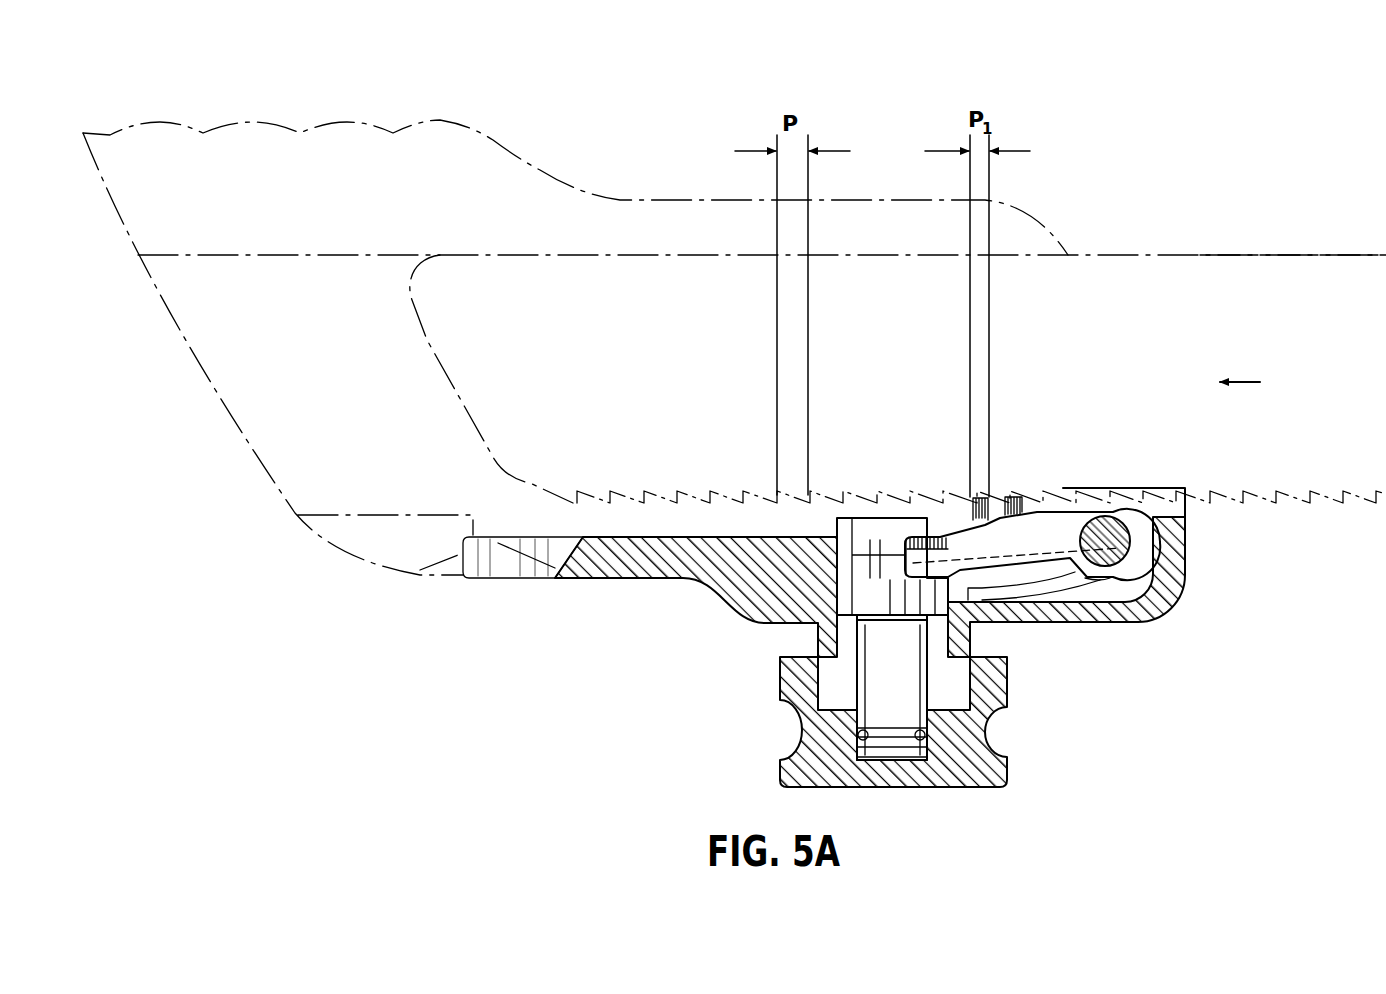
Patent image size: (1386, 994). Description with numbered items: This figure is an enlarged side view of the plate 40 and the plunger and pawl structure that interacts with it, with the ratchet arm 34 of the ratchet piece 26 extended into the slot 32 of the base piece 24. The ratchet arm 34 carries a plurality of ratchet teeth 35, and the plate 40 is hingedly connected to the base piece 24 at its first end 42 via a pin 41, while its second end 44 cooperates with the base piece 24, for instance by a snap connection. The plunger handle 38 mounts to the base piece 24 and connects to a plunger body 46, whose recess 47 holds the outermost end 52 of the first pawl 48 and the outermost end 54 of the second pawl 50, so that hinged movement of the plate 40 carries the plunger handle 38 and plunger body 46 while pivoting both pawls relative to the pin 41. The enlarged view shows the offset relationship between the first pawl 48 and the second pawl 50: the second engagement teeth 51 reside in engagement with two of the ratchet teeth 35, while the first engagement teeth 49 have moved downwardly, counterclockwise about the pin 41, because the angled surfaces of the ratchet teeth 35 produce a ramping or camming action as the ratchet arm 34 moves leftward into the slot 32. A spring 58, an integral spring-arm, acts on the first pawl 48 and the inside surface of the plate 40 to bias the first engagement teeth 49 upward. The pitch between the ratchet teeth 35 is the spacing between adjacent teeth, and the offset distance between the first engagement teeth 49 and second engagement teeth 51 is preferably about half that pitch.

The base piece 24 is at (508, 145).
The ratchet piece 26 is at (1298, 252).
The slot 32 is at (268, 395).
The ratchet arm 34 is at (1160, 255).
The ratchet teeth 35 is at (1290, 505).
The plunger handle 38 is at (988, 735).
The plate 40 is at (602, 580).
The pin 41 is at (1112, 535).
The first end 42 is at (1184, 573).
The second end 44 is at (475, 577).
The plunger body 46 is at (865, 690).
The recess 47 is at (880, 560).
The first pawl 48 is at (1102, 585).
The first engagement teeth 49 is at (978, 500).
The second pawl 50 is at (1047, 510).
The second engagement teeth 51 is at (1013, 500).
The outermost end of first pawl 52 is at (912, 560).
The outermost end of second pawl 54 is at (915, 538).
The spring 58 is at (985, 593).